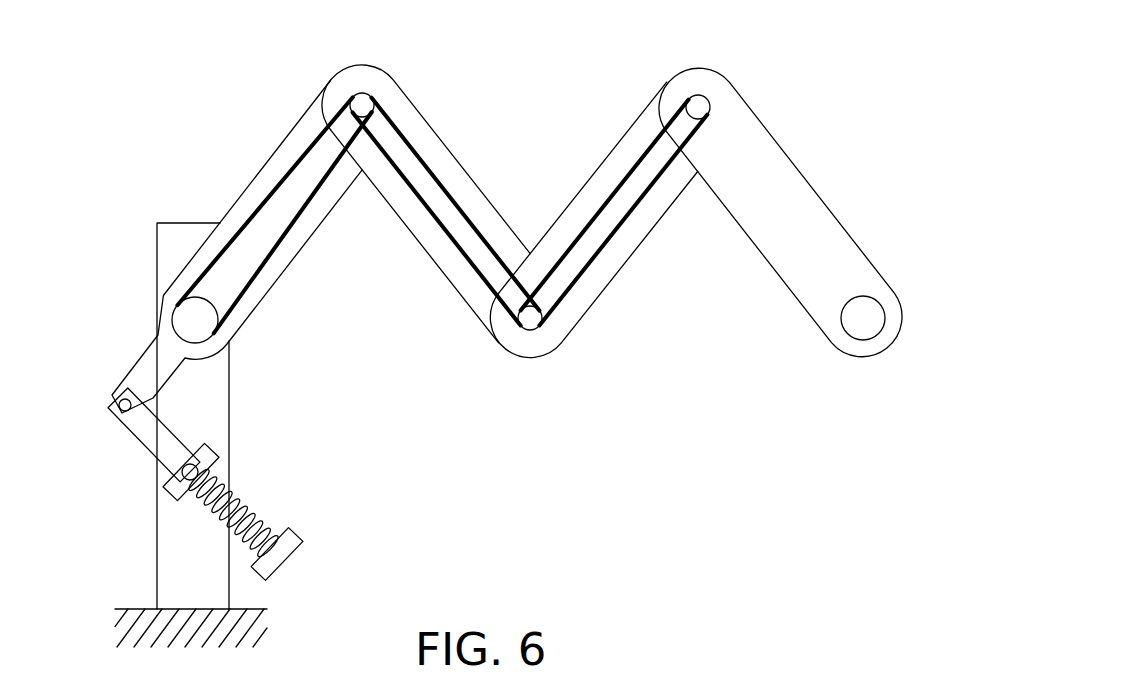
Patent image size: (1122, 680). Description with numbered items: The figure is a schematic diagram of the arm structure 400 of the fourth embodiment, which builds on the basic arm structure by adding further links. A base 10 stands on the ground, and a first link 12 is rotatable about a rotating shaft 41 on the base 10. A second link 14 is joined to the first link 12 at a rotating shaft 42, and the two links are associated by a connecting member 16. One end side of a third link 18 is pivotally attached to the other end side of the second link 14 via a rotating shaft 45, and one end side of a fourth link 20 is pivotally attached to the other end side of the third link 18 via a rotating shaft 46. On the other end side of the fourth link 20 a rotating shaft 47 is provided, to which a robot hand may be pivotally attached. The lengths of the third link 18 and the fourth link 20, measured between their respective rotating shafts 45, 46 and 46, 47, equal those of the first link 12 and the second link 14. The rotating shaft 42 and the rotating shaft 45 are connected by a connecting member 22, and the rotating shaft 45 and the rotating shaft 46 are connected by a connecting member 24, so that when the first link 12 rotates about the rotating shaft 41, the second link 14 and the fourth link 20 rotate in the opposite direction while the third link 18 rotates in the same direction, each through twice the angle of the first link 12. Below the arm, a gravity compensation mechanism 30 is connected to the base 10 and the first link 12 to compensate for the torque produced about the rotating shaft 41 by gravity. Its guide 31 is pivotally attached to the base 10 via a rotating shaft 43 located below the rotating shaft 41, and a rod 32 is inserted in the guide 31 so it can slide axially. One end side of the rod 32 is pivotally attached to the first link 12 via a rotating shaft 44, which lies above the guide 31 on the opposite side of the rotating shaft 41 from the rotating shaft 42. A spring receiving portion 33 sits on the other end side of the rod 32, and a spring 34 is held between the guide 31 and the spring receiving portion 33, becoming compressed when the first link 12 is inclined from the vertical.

The arm structure 400 is at (805, 63).
The base 10 is at (180, 235).
The first link 12 is at (287, 150).
The second link 14 is at (462, 163).
The connecting member 16 is at (297, 223).
The third link 18 is at (623, 157).
The fourth link 20 is at (787, 183).
The connecting member 22 is at (422, 207).
The connecting member 24 is at (633, 213).
The gravity compensation mechanism 30 is at (313, 517).
The guide 31 is at (207, 458).
The rod 32 is at (145, 430).
The spring receiving portion 33 is at (263, 547).
The spring 34 is at (233, 493).
The rotating shaft 41 is at (197, 320).
The rotating shaft 42 is at (362, 103).
The rotating shaft 43 is at (186, 470).
The rotating shaft 44 is at (115, 402).
The rotating shaft 45 is at (531, 320).
The rotating shaft 46 is at (696, 103).
The rotating shaft 47 is at (860, 330).